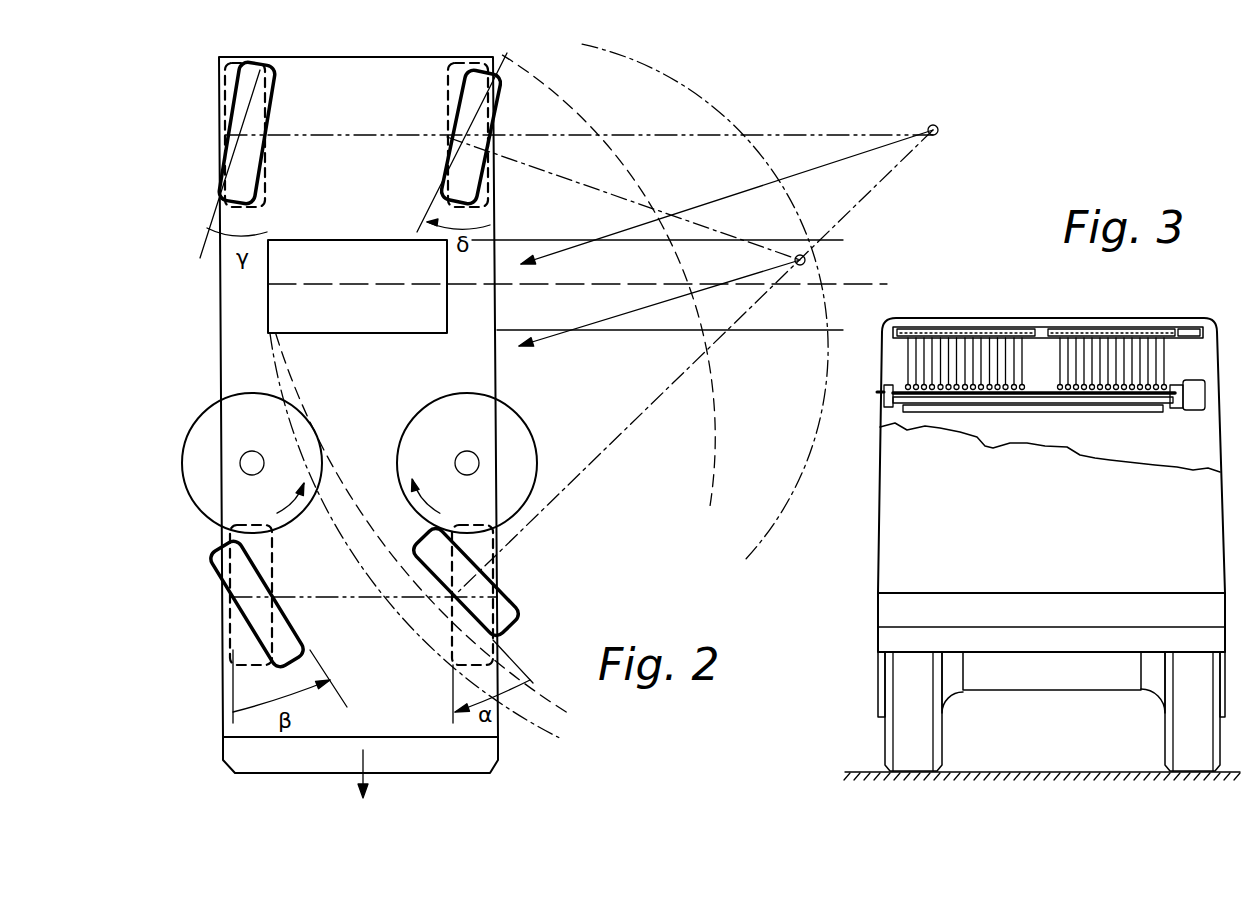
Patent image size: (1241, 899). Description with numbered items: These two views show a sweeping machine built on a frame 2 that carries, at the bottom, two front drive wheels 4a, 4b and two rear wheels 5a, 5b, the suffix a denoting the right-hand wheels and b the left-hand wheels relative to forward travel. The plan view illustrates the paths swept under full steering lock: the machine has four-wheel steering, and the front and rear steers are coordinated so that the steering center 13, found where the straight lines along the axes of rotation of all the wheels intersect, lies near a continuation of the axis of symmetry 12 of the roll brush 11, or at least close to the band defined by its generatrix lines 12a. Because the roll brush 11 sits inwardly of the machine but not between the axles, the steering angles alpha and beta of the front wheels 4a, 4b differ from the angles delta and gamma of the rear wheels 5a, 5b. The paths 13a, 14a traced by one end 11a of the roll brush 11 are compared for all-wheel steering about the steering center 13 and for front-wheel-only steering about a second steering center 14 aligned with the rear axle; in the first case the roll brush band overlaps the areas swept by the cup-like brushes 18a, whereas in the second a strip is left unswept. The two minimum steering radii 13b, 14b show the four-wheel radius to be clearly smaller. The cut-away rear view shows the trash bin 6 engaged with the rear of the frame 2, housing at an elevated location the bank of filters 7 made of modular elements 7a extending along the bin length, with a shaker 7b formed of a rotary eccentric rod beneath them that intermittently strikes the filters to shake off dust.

In FIG. 3, the frame 2 is at (1095, 615).
In FIG. 2, the front wheel 4a is at (517, 607).
In FIG. 2, the front wheel 4b is at (243, 628).
In FIG. 2, the rear wheel 5a is at (500, 118).
In FIG. 3, the rear wheel 5a is at (942, 728).
In FIG. 2, the rear wheel 5b is at (225, 115).
In FIG. 3, the rear wheel 5b is at (1173, 738).
In FIG. 3, the trash bin 6 is at (1040, 501).
In FIG. 3, the bank of filters 7 is at (1108, 419).
In FIG. 3, the modular elements 7a is at (1023, 355).
In FIG. 3, the shaker 7b is at (977, 413).
In FIG. 2, the roll brush 11 is at (352, 321).
In FIG. 2, the end of the roll brush 11a is at (268, 280).
In FIG. 2, the axis of symmetry 12 is at (857, 278).
In FIG. 2, the generatrix lines 12a is at (528, 240).
In FIG. 2, the steering center 13 is at (802, 266).
In FIG. 2, the path 13a is at (557, 735).
In FIG. 2, the minimum steering radius 13b is at (700, 295).
In FIG. 2, the second steering center 14 is at (930, 123).
In FIG. 2, the path 14a is at (572, 716).
In FIG. 2, the minimum steering radius 14b is at (697, 212).
In FIG. 2, the cup-like brushes 18a is at (192, 425).